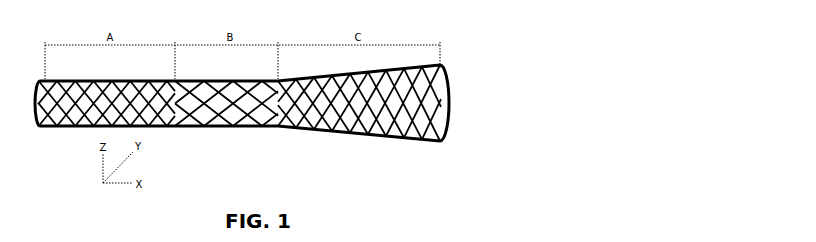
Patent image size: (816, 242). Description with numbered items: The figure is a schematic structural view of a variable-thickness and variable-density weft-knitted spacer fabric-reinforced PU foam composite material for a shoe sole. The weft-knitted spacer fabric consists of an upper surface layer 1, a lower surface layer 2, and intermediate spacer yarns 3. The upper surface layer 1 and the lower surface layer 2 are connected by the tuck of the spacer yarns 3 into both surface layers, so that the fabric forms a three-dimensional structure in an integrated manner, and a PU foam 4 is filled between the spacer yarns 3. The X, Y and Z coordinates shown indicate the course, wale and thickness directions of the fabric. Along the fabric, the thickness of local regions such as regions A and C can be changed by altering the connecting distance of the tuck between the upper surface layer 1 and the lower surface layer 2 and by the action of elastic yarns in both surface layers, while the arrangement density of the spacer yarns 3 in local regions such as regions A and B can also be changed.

The upper surface layer 1 is at (440, 66).
The lower surface layer 2 is at (438, 140).
The spacer yarns 3 is at (303, 128).
The PU foam 4 is at (267, 125).